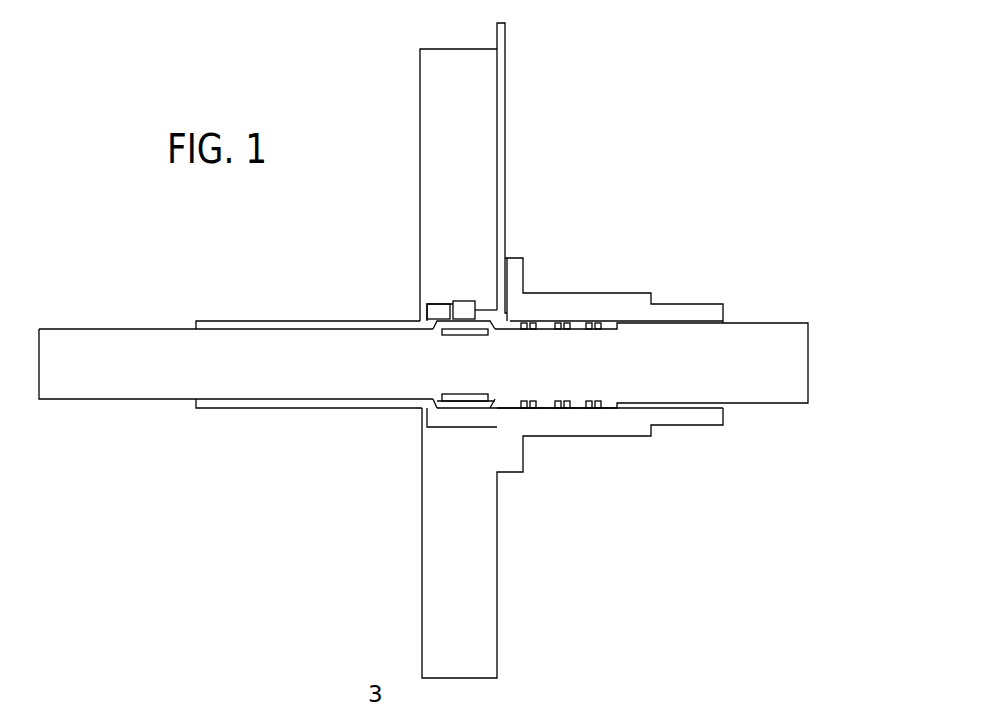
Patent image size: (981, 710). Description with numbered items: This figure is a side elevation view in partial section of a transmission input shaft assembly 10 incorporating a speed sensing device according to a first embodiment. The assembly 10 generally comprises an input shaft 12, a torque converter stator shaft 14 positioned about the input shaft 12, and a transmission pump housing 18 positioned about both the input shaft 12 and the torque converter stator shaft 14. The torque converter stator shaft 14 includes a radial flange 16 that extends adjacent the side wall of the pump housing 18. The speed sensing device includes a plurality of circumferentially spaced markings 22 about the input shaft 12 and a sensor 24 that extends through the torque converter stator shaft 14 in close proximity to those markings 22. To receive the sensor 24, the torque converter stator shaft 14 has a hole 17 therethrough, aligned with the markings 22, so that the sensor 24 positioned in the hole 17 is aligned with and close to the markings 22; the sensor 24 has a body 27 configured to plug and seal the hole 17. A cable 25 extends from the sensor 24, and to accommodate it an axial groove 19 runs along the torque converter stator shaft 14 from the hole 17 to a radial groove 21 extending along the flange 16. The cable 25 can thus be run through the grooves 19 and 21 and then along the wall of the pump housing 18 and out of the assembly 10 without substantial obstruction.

The transmission input shaft assembly 10 is at (724, 141).
The input shaft 12 is at (108, 400).
The torque converter stator shaft 14 is at (368, 410).
The radial flange 16 is at (524, 270).
The hole 17 is at (485, 327).
The transmission pump housing 18 is at (500, 634).
The axial groove 19 is at (500, 313).
The radial groove 21 is at (510, 257).
The circumferentially spaced markings 22 is at (462, 334).
The sensor 24 is at (455, 300).
The cable 25 is at (506, 96).
The body 27 is at (466, 301).